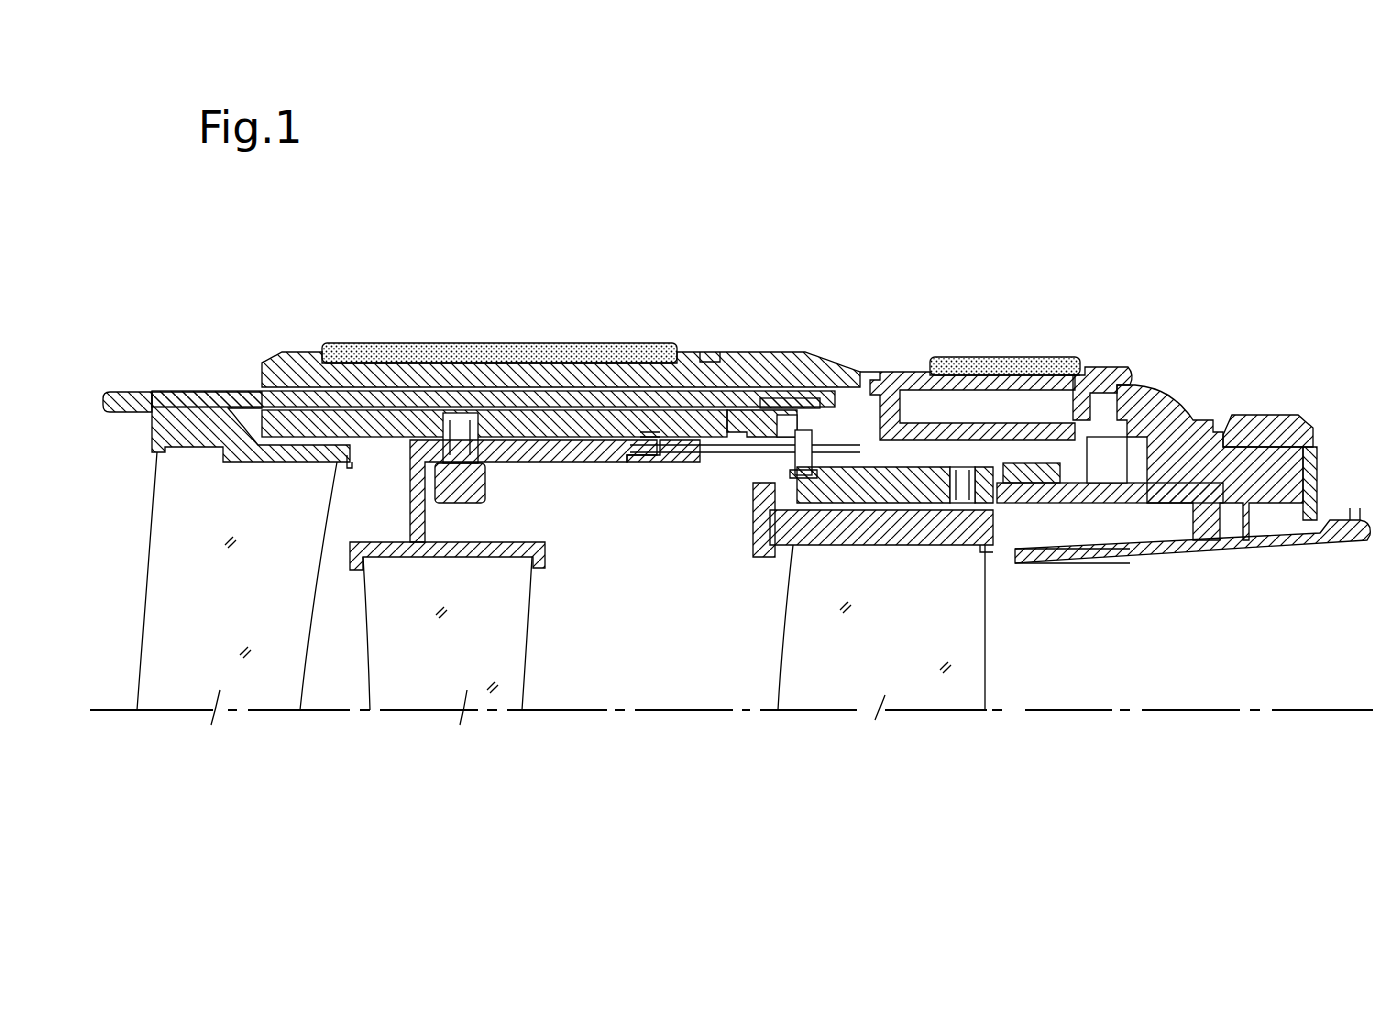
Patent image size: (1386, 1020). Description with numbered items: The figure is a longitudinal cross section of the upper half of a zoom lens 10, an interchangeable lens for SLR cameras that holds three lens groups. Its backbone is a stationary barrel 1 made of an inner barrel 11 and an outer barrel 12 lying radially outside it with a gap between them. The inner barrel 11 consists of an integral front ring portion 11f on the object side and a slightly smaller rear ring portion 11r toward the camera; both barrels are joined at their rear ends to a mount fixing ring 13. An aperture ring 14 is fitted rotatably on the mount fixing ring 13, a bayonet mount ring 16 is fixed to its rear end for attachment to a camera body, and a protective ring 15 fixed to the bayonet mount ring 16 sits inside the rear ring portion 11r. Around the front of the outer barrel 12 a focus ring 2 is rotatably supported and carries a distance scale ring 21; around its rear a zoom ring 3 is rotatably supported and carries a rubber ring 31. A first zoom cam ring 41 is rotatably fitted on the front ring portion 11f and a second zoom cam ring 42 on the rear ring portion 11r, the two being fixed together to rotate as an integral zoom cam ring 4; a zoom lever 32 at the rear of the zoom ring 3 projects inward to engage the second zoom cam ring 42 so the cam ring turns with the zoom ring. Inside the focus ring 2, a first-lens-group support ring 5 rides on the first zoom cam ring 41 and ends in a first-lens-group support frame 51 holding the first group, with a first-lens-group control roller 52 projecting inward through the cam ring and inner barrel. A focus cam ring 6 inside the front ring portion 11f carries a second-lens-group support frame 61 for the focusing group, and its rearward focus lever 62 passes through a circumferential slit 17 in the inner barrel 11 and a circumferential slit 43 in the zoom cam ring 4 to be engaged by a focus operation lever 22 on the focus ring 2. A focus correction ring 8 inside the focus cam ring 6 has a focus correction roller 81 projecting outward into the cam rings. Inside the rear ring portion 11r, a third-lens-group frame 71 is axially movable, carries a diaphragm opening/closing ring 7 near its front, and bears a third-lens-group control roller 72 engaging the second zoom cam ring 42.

The stationary barrel 1 is at (262, 400).
The focus ring 2 is at (288, 365).
The zoom ring 3 is at (872, 380).
The zoom cam ring 4 is at (697, 417).
The first-lens-group support ring 5 is at (137, 395).
The focus cam ring 6 is at (528, 447).
The diaphragm opening/closing ring 7 is at (770, 543).
The focus correction ring 8 is at (453, 487).
The zoom lens 10 is at (1080, 198).
The inner barrel 11 is at (1190, 483).
The front ring portion 11f is at (645, 432).
The rear ring portion 11r is at (1043, 555).
The outer barrel 12 is at (745, 365).
The mount fixing ring 13 is at (1148, 395).
The aperture ring 14 is at (1252, 428).
The protective ring 15 is at (1330, 545).
The bayonet mount ring 16 is at (1312, 470).
The circumferential slit 17 is at (772, 457).
The distance scale ring 21 is at (372, 355).
The focus operation lever 22 is at (893, 420).
The rubber ring 31 is at (1003, 360).
The zoom lever 32 is at (1073, 468).
The first zoom cam ring 41 is at (540, 380).
The second zoom cam ring 42 is at (1105, 372).
The circumferential slit 43 is at (835, 440).
The first-lens-group support frame 51 is at (350, 466).
The first-lens-group control roller 52 is at (777, 427).
The second-lens-group support frame 61 is at (527, 560).
The focus lever 62 is at (705, 457).
The third-lens-group frame 71 is at (965, 510).
The third-lens-group control roller 72 is at (975, 540).
The focus correction roller 81 is at (460, 425).